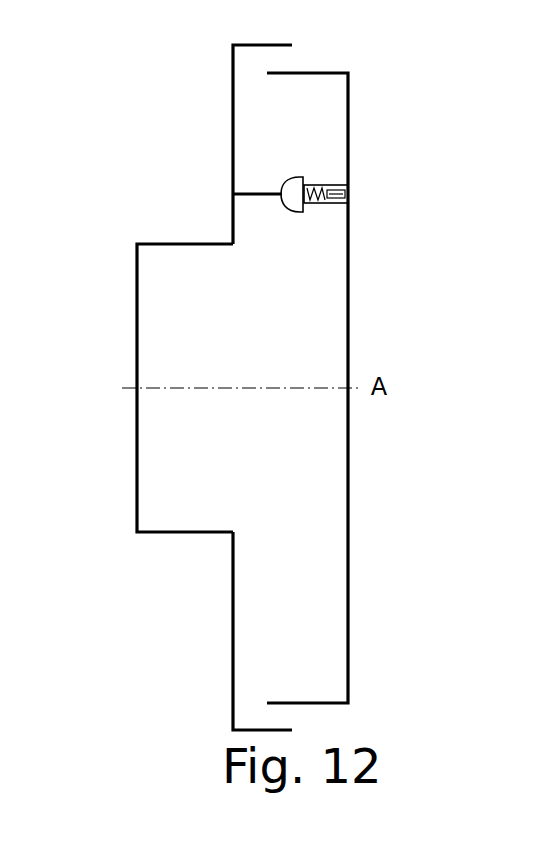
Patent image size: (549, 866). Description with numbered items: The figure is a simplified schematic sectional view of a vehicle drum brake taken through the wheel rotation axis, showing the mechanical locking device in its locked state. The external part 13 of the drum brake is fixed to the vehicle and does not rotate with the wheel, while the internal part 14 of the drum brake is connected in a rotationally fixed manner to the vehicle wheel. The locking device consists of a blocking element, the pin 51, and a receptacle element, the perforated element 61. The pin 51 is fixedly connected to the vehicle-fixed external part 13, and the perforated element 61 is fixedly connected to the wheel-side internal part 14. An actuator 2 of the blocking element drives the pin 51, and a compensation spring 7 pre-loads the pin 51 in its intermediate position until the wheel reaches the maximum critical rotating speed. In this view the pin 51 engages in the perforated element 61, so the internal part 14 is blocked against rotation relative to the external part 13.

The actuator of the blocking element 2 is at (290, 192).
The compensation spring 7 is at (318, 185).
The external part of the drum brake 13 is at (137, 316).
The internal part of the drum brake 14 is at (350, 572).
The pin 51 is at (348, 193).
The perforated element 61 is at (348, 186).